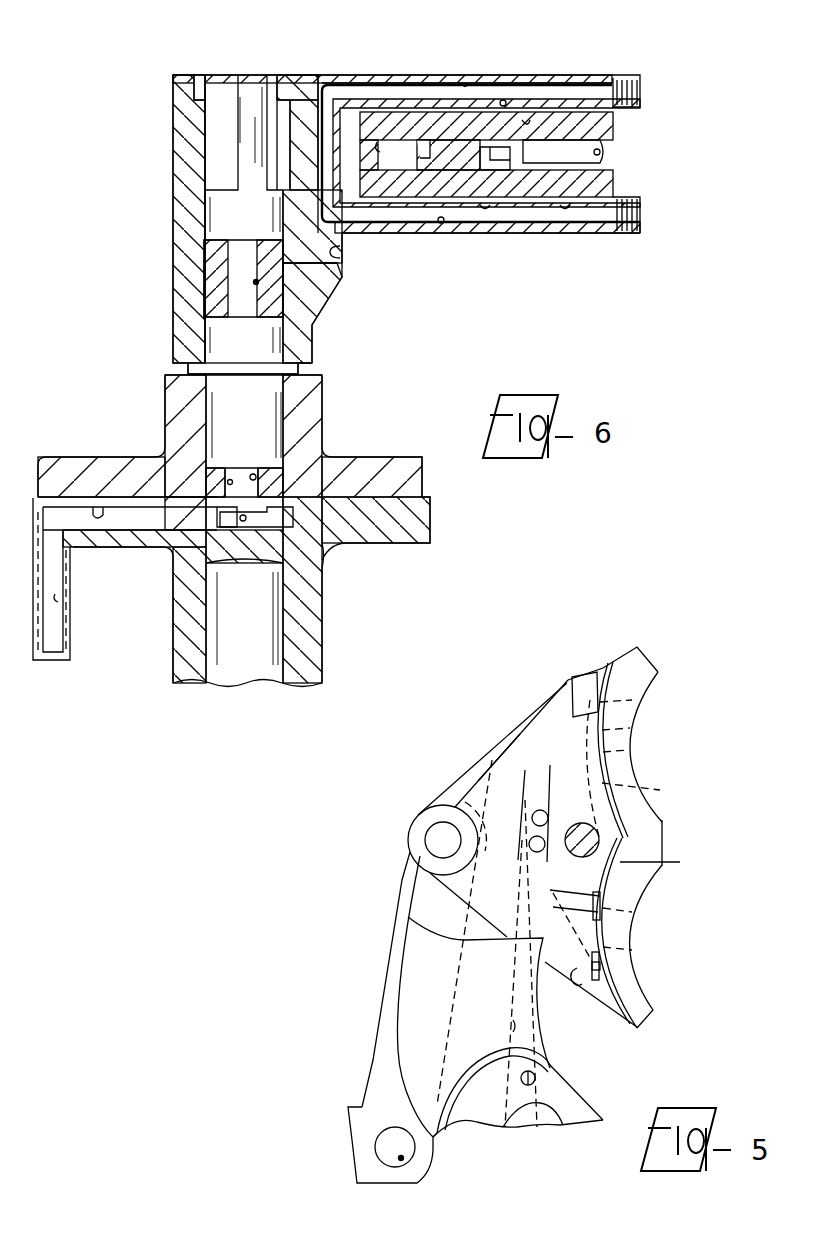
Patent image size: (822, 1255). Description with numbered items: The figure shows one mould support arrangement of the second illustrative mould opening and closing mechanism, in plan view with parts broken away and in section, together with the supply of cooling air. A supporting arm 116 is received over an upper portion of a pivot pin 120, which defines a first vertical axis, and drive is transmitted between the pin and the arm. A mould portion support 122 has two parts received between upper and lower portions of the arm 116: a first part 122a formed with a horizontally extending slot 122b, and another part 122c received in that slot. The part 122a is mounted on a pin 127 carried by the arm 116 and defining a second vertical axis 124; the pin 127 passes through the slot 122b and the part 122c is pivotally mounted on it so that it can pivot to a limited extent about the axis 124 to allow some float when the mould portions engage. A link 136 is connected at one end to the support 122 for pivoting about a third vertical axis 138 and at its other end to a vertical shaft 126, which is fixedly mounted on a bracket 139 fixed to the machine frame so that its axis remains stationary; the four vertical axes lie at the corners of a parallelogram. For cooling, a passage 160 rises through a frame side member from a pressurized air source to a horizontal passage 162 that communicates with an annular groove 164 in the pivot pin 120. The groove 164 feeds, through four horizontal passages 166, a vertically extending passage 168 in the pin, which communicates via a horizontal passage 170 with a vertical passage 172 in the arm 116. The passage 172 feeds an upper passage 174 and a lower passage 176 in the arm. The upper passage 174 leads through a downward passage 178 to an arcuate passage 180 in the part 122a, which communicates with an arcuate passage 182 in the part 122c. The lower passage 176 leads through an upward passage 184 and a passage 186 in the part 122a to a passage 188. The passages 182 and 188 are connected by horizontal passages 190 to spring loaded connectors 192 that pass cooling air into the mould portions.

In FIG. 6, the supporting arm 116 is at (575, 78).
In FIG. 5, the supporting arm 116 is at (410, 990).
In FIG. 6, the pivot pin 120 is at (210, 248).
In FIG. 5, the mould portion support 122 is at (430, 793).
In FIG. 6, the first part of the support 122a is at (592, 120).
In FIG. 5, the first part of the support 122a is at (478, 781).
In FIG. 6, the slot 122b is at (377, 142).
In FIG. 5, the slot 122b is at (540, 757).
In FIG. 6, the other part of the support 122c is at (428, 148).
In FIG. 5, the other part of the support 122c is at (648, 677).
In FIG. 5, the second vertical axis 124 is at (600, 842).
In FIG. 5, the vertical shaft 126 is at (401, 1158).
In FIG. 5, the pin 127 is at (672, 864).
In FIG. 5, the link 136 is at (432, 1143).
In FIG. 5, the third vertical axis 138 is at (440, 840).
In FIG. 5, the bracket 139 is at (365, 1185).
In FIG. 6, the cooling passage 160 is at (58, 598).
In FIG. 6, the passage 162 is at (93, 507).
In FIG. 6, the annular groove 164 is at (193, 512).
In FIG. 6, the horizontal passages 166 is at (246, 520).
In FIG. 6, the vertically extending passage 168 is at (280, 473).
In FIG. 6, the horizontal passage 170 is at (257, 283).
In FIG. 5, the horizontal passage 170 is at (535, 1135).
In FIG. 6, the vertically extending passage 172 is at (341, 257).
In FIG. 5, the vertically extending passage 172 is at (538, 1080).
In FIG. 6, the upper passage 174 is at (465, 82).
In FIG. 5, the upper passage 174 is at (513, 1020).
In FIG. 6, the lower passage 176 is at (443, 225).
In FIG. 6, the passage 178 is at (501, 98).
In FIG. 6, the arcuate passage 180 is at (527, 120).
In FIG. 5, the arcuate passage 180 is at (527, 838).
In FIG. 6, the arcuate passage 182 is at (597, 152).
In FIG. 5, the arcuate passage 182 is at (547, 783).
In FIG. 6, the passage 184 is at (505, 200).
In FIG. 6, the passage 186 is at (563, 207).
In FIG. 6, the passage 188 is at (485, 205).
In FIG. 5, the passage 188 is at (570, 1000).
In FIG. 5, the horizontal passages 190 is at (583, 677).
In FIG. 5, the spring loaded connectors 192 is at (610, 927).